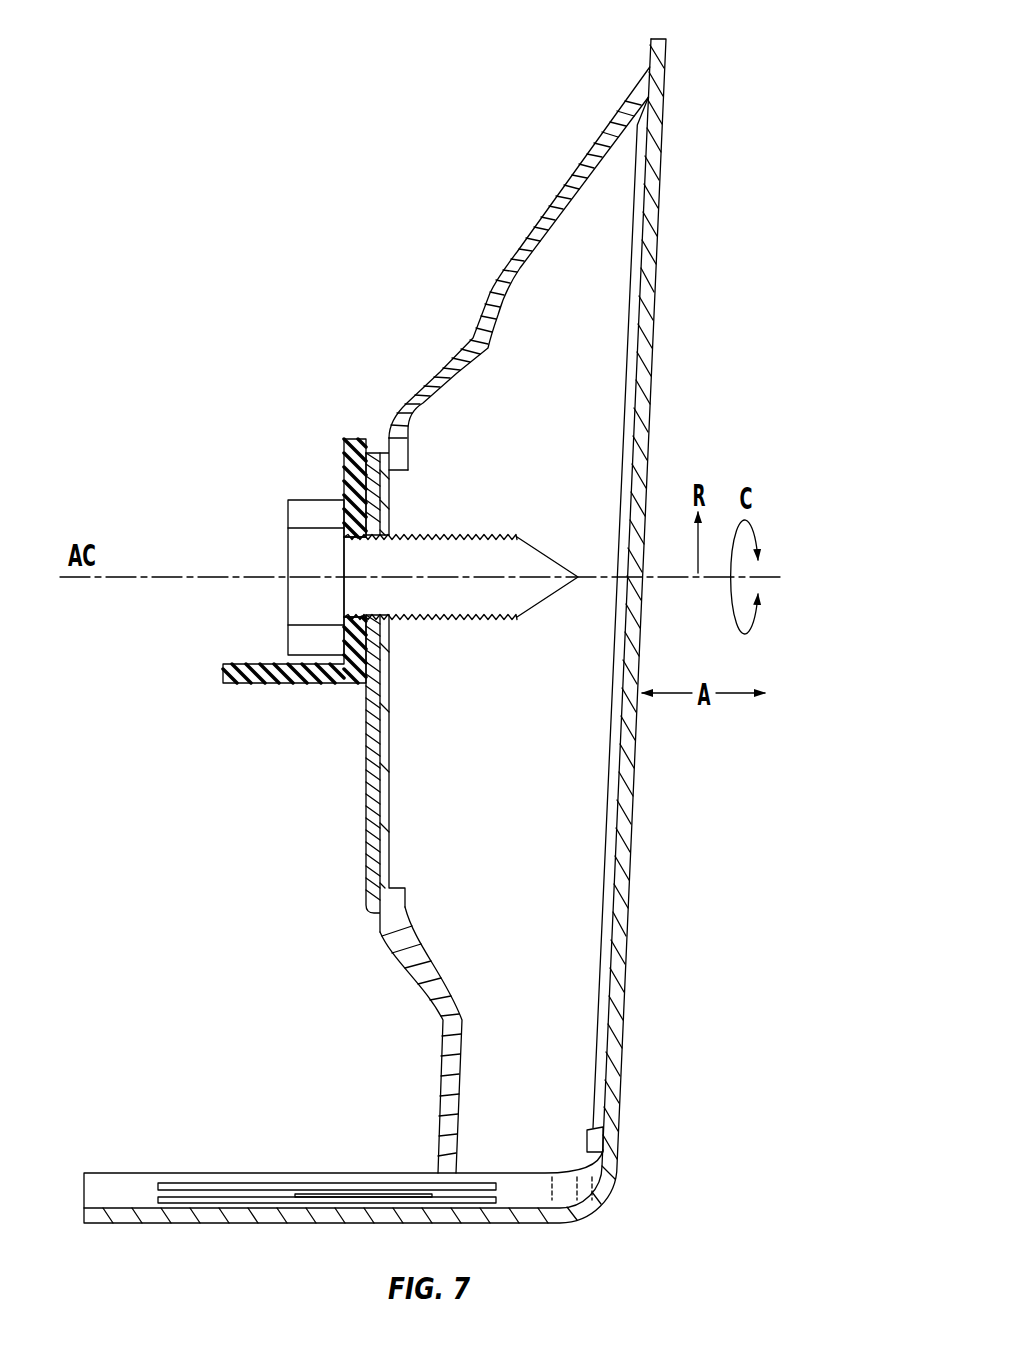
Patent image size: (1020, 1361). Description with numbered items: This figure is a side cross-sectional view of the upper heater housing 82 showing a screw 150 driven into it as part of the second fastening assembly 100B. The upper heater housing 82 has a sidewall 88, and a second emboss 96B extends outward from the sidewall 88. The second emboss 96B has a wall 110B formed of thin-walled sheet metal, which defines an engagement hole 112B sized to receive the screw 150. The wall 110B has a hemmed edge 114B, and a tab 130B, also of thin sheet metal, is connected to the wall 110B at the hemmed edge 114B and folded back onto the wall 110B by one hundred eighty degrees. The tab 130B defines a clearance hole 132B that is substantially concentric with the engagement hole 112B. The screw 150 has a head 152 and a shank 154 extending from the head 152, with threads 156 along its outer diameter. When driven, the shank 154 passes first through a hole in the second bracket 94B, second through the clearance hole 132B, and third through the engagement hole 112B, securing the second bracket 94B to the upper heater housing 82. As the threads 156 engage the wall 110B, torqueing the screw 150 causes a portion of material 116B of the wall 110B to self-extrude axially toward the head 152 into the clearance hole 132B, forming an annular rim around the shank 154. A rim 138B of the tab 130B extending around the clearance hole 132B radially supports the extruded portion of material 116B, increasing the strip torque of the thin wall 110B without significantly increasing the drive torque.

The upper heater housing 82 is at (548, 112).
The sidewall 88 is at (655, 218).
The second emboss 96B is at (510, 260).
The second fastening assembly 100B is at (205, 322).
The second bracket 94B is at (345, 462).
The rim 138B is at (366, 697).
The tab 130B is at (372, 838).
The wall 110B is at (385, 742).
The hemmed edge 114B is at (383, 925).
The portion of material 116B is at (378, 610).
The engagement hole 112B is at (430, 592).
The clearance hole 132B is at (368, 573).
The screw 150 is at (278, 482).
The head 152 is at (300, 545).
The shank 154 is at (518, 567).
The threads 156 is at (481, 620).